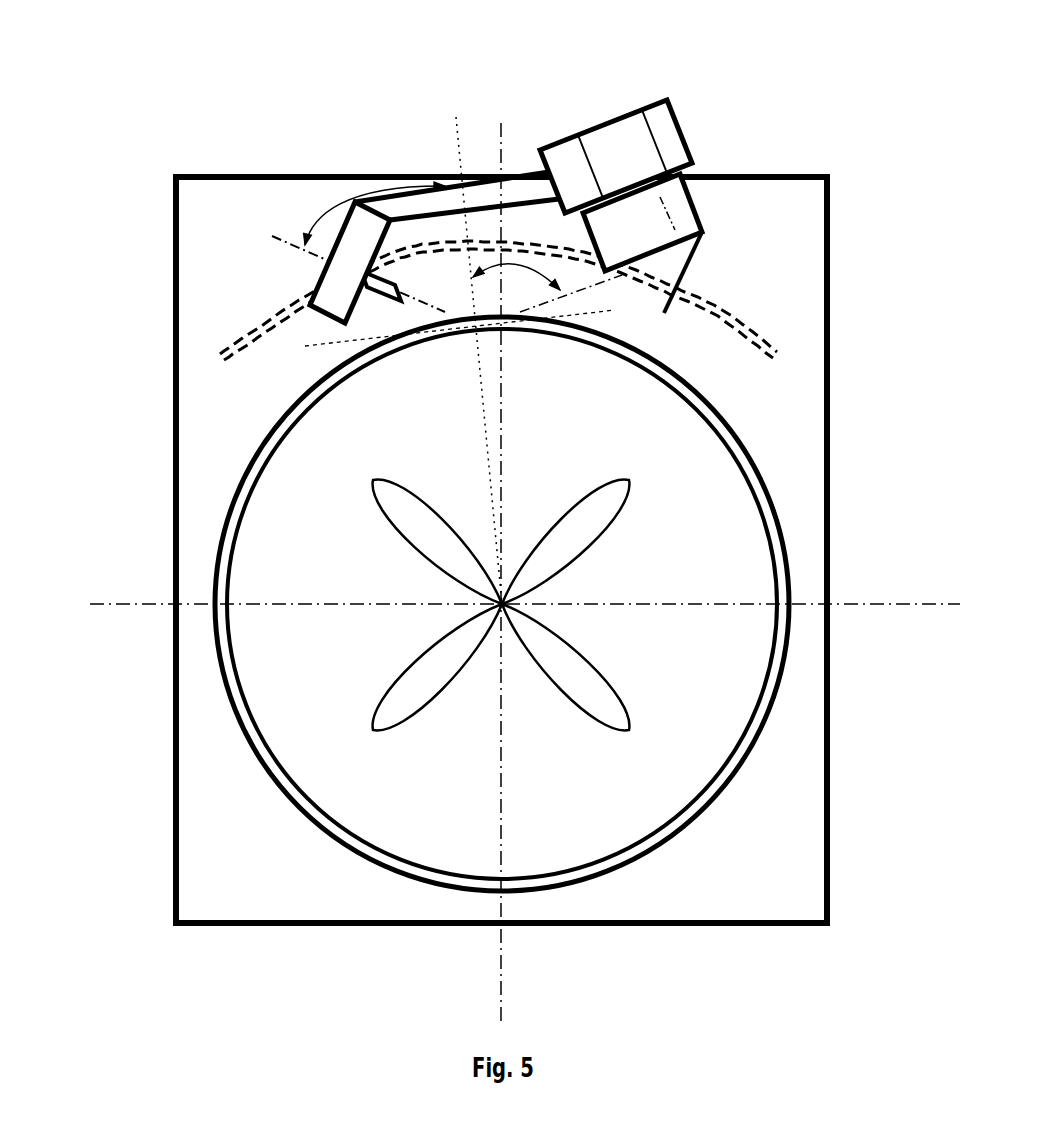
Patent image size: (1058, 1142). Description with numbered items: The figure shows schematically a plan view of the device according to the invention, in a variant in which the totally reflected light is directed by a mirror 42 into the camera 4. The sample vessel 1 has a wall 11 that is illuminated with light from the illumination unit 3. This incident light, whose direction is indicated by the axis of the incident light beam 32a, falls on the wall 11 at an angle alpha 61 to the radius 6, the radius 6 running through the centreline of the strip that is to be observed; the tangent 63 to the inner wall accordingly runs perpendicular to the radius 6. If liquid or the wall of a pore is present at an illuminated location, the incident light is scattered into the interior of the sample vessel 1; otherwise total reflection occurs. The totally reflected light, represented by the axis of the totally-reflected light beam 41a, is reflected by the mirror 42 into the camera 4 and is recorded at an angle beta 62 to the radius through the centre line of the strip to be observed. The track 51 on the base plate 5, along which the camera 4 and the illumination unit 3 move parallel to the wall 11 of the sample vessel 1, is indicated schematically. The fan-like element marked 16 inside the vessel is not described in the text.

The sample vessel 1 is at (292, 683).
The wall of the sample vessel 11 is at (767, 490).
The fan blade 16 is at (570, 680).
The base plate 5 is at (785, 886).
The radius 6 is at (458, 158).
The angle alpha 61 is at (340, 202).
The angle beta 62 is at (540, 262).
The illumination unit 3 is at (308, 297).
The axis of the incident light beam 32a is at (270, 235).
The camera 4 is at (647, 125).
The axis of the totally-reflected light beam 41a is at (678, 214).
The mirror 42 is at (687, 268).
The track 51 is at (265, 322).
The tangent to the inner wall 63 is at (305, 346).